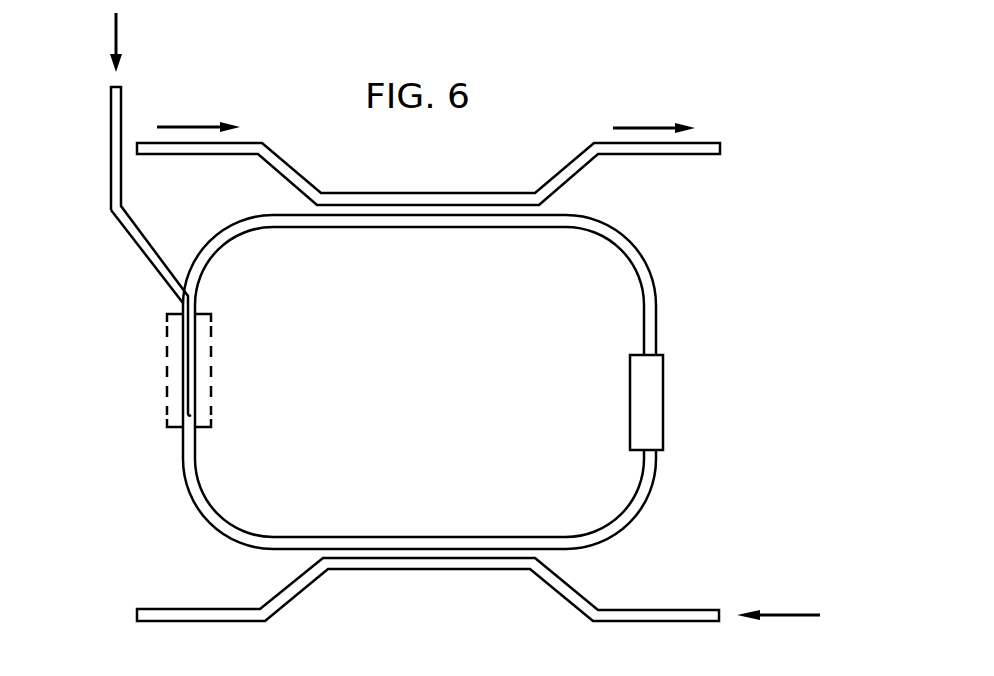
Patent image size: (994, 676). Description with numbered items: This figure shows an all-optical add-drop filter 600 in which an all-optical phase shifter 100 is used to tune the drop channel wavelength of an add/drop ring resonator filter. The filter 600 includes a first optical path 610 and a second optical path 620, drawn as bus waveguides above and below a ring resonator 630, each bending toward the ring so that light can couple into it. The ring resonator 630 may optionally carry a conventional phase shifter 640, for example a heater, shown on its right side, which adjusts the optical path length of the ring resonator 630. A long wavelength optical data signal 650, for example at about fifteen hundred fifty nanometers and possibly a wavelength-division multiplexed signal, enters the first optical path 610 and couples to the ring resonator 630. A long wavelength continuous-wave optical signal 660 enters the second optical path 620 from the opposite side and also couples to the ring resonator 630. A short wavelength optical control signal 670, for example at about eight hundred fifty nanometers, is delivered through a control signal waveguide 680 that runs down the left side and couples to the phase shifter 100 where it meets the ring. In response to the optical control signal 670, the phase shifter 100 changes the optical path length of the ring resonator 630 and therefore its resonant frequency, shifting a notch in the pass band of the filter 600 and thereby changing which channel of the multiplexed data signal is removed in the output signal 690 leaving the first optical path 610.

The phase shifter 100 is at (167, 372).
The all-optical add-drop filter 600 is at (760, 76).
The first optical path 610 is at (428, 192).
The second optical path 620 is at (427, 571).
The ring resonator 630 is at (654, 315).
The conventional phase shifter 640 is at (664, 402).
The optical data signal 650 is at (190, 125).
The CW optical signal 660 is at (790, 618).
The optical control signal 670 is at (113, 33).
The control signal waveguide 680 is at (111, 148).
The output signal 690 is at (645, 127).